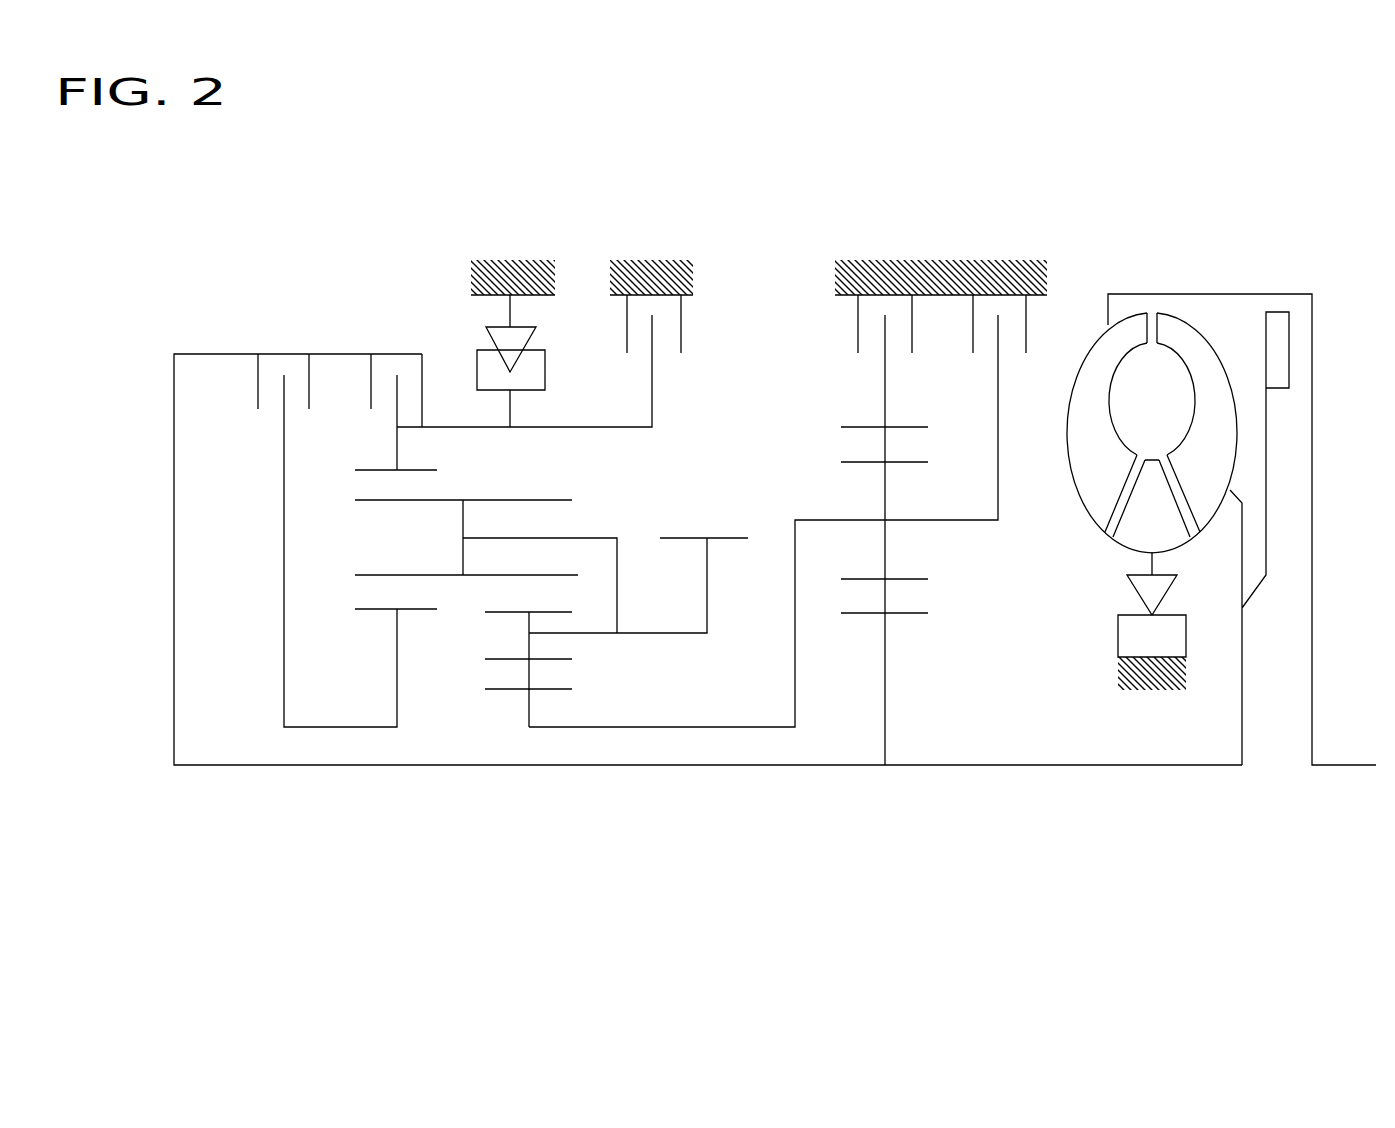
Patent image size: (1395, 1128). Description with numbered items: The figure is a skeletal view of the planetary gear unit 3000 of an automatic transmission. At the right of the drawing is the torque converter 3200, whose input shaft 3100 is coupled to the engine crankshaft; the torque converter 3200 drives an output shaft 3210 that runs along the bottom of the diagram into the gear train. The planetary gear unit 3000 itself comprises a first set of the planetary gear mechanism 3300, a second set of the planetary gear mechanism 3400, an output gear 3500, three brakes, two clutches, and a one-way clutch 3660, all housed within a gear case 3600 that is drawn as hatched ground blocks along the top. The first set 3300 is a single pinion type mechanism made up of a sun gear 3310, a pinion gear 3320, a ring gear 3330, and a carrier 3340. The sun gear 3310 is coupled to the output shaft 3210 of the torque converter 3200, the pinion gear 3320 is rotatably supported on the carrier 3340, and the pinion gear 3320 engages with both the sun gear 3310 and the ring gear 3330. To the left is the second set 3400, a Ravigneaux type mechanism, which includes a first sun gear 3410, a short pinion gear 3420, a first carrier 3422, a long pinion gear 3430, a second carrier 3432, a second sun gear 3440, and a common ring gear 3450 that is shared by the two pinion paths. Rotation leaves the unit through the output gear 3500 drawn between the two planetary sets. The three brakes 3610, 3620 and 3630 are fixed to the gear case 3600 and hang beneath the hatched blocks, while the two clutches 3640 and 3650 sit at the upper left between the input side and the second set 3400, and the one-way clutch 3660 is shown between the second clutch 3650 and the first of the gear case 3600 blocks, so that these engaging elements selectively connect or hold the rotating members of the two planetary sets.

The planetary gear unit 3000 is at (781, 166).
The input shaft 3100 is at (1340, 767).
The torque converter 3200 is at (1183, 270).
The output shaft 3210 is at (1021, 765).
The first set of the planetary gear mechanism 3300 is at (797, 596).
The sun gear S (UD) 3310 is at (901, 657).
The pinion gear 3320 is at (915, 568).
The ring gear R (UD) 3330 is at (896, 415).
The carrier C (UD) 3340 is at (999, 483).
The second set of the planetary gear mechanism 3400 is at (506, 661).
The sun gear S (D) 3410 is at (584, 689).
The short pinion gear 3420 is at (480, 621).
The carrier C (1) 3422 is at (597, 636).
The long pinion gear 3430 is at (571, 491).
The carrier C (2) 3432 is at (548, 538).
The sun gear S (S) 3440 is at (376, 621).
The ring gear R (1) (R (2)) 3450 is at (428, 448).
The output gear 3500 is at (731, 531).
The gear case 3600 is at (510, 258).
The B1 brake 3610 is at (1016, 357).
The B2 brake 3620 is at (672, 357).
The B3 brake 3630 is at (853, 357).
The C1 clutch 3640 is at (250, 395).
The C2 clutch 3650 is at (362, 395).
The one-way clutch F 3660 is at (475, 340).